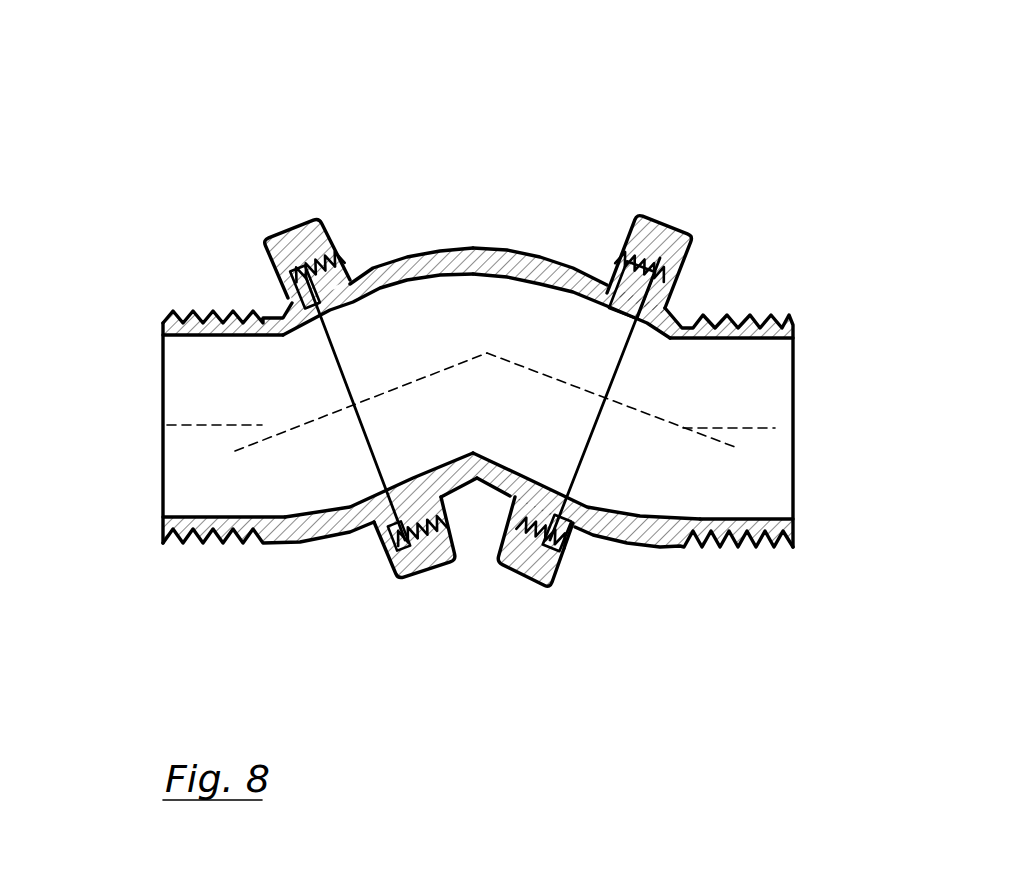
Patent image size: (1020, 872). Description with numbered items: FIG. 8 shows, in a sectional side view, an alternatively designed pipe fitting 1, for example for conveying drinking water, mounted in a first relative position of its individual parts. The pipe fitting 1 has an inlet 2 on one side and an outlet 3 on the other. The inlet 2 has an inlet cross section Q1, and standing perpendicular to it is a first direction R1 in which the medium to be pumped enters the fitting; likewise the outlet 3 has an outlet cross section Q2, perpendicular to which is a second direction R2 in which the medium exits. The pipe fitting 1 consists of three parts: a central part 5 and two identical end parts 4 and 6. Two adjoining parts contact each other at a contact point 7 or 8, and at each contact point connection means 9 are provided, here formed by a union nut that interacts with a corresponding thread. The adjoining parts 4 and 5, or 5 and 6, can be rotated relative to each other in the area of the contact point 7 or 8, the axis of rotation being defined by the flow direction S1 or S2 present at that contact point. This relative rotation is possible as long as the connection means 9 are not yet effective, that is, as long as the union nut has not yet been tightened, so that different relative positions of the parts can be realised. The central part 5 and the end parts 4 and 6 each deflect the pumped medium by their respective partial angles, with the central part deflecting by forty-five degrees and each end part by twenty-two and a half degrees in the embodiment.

The pipe fitting 1 is at (502, 118).
The inlet 2 is at (133, 385).
The outlet 3 is at (864, 387).
The end part 4 is at (303, 535).
The central part 5 is at (503, 490).
The end part 6 is at (650, 535).
The contact point 7 is at (340, 352).
The contact point 8 is at (617, 370).
The connection means 9 is at (293, 248).
The first direction R1 is at (147, 425).
The second direction R2 is at (797, 428).
The flow direction S1 is at (330, 414).
The flow direction S2 is at (570, 393).
The inlet cross section Q1 is at (161, 471).
The outlet cross section Q2 is at (797, 464).